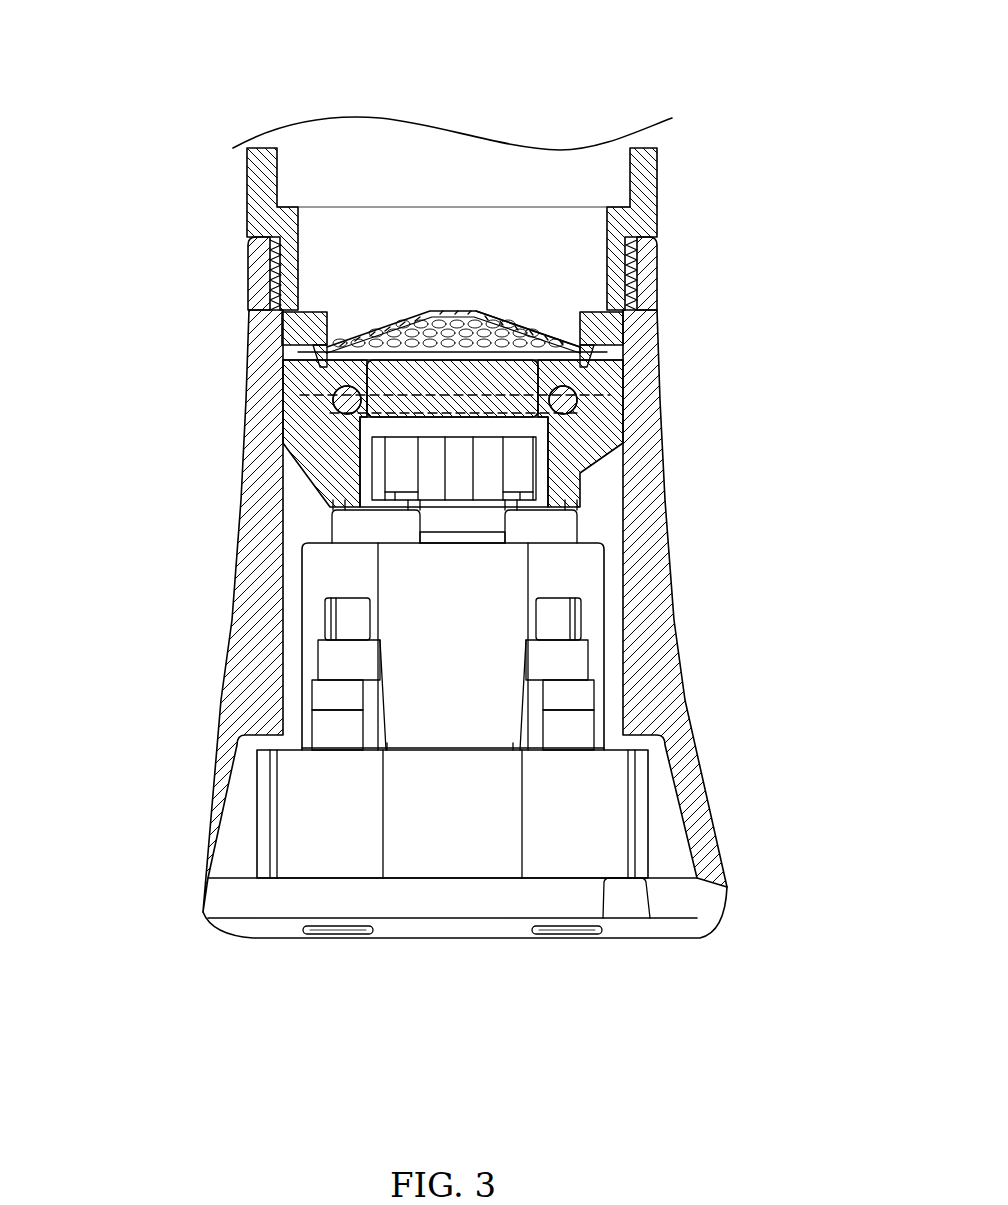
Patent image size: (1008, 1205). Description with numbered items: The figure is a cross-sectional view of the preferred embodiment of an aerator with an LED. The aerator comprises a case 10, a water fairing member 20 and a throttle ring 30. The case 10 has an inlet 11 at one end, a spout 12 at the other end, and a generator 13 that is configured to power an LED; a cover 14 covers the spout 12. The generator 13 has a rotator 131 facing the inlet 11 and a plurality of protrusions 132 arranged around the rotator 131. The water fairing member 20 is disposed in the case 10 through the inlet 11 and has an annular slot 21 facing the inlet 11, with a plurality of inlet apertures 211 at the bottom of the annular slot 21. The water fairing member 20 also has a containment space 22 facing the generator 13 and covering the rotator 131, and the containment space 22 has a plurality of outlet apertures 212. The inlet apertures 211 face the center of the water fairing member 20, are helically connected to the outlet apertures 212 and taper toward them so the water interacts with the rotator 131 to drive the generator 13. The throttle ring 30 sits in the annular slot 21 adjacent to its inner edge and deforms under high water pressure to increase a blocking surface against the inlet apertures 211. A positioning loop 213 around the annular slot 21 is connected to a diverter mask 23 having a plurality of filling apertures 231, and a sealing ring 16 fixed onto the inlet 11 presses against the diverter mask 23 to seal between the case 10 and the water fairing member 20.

The case 10 is at (680, 547).
The inlet 11 is at (466, 236).
The spout 12 is at (234, 832).
The generator 13 is at (595, 623).
The rotator 131 is at (358, 522).
The protrusions 132 is at (360, 568).
The cover 14 is at (335, 905).
The sealing ring 16 is at (270, 286).
The water fairing member 20 is at (303, 459).
The annular slot 21 is at (335, 400).
The inlet apertures 211 is at (473, 460).
The outlet apertures 212 is at (540, 480).
The positioning loop 213 is at (295, 355).
The containment space 22 is at (550, 437).
The diverter mask 23 is at (460, 310).
The filling apertures 231 is at (530, 330).
The throttle ring 30 is at (572, 382).